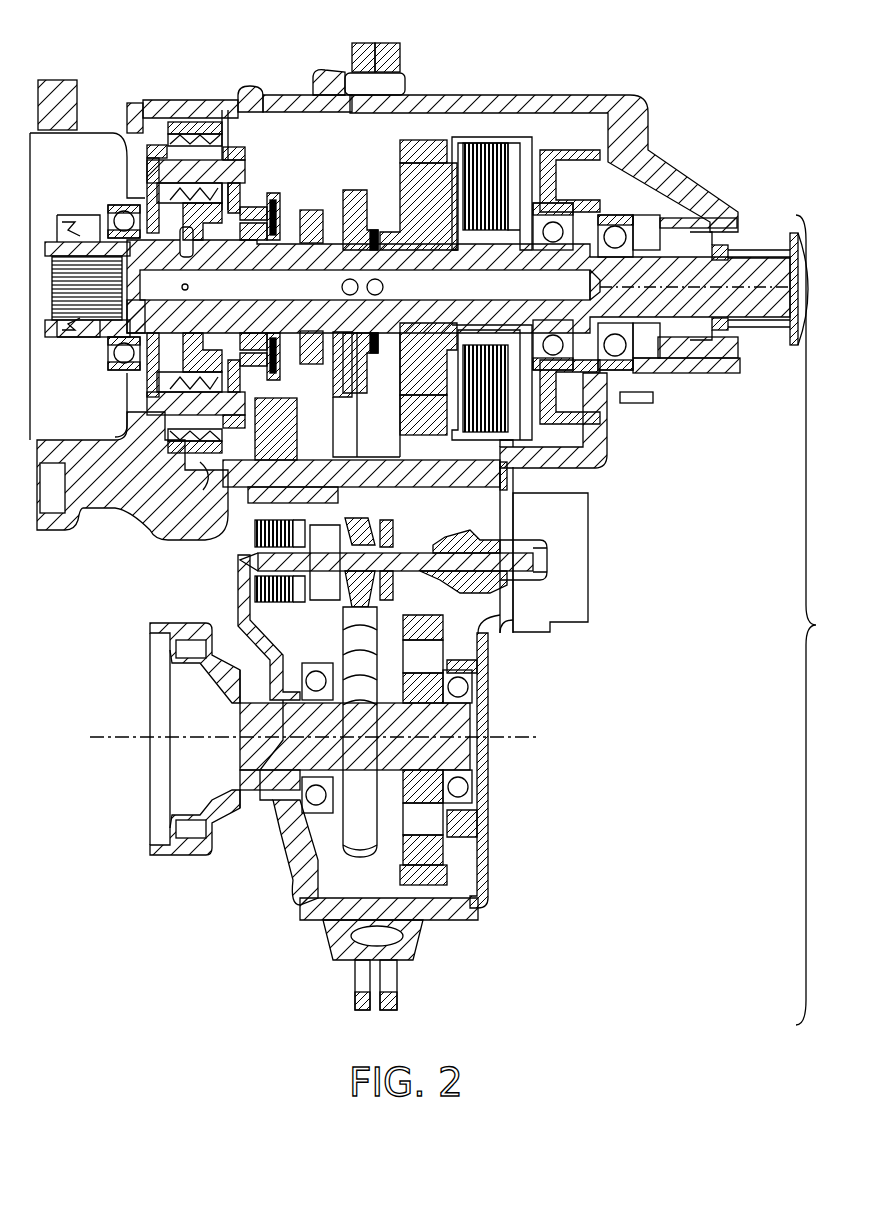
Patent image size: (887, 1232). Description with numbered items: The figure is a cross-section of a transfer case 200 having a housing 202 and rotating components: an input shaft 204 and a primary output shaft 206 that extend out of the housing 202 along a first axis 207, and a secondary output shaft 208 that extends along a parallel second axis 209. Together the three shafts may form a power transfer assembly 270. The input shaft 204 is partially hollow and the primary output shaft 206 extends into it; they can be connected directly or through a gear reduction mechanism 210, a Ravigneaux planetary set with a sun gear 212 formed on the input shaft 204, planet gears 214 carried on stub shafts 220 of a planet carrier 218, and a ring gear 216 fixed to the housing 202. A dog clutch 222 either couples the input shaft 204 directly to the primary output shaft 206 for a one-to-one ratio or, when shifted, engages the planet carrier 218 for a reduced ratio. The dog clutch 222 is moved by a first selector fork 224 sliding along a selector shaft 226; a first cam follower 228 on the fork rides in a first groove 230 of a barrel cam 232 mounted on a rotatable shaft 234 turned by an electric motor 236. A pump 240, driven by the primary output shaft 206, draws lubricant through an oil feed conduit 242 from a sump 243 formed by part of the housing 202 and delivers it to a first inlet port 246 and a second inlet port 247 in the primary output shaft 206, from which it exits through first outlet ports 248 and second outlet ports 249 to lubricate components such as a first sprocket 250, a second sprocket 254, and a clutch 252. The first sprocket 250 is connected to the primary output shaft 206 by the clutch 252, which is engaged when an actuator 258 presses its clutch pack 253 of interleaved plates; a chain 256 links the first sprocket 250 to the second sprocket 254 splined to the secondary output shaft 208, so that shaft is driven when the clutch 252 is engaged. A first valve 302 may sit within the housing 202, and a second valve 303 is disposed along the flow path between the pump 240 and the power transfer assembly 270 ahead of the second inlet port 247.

The transfer case 200 is at (655, 186).
The housing 202 is at (628, 100).
The input shaft 204 is at (75, 238).
The primary output shaft 206 is at (790, 240).
The first axis 207 is at (748, 240).
The secondary output shaft 208 is at (178, 622).
The second axis 209 is at (135, 737).
The gear reduction mechanism 210 is at (248, 145).
The sun gear 212 is at (256, 188).
The planet gears 214 is at (182, 122).
The ring gear 216 is at (205, 120).
The planet carrier 218 is at (240, 192).
The stub shafts 220 is at (155, 145).
The dog clutch 222 is at (275, 205).
The first selector fork 224 is at (292, 432).
The selector shaft 226 is at (178, 500).
The first cam follower 228 is at (300, 532).
The first groove 230 is at (258, 561).
The barrel cam 232 is at (387, 525).
The rotatable shaft 234 is at (548, 580).
The electric motor 236 is at (592, 548).
The pump 240 is at (350, 100).
The oil feed conduit 242 is at (352, 403).
The sump 243 is at (374, 808).
The first inlet port 246 is at (342, 289).
The second inlet port 247 is at (383, 288).
The first outlet ports 248 is at (592, 287).
The second outlet ports 249 is at (124, 205).
The first sprocket 250 is at (402, 165).
The clutch 252 is at (526, 128).
The clutch pack 253 is at (490, 142).
The second sprocket 254 is at (440, 850).
The chain 256 is at (435, 140).
The actuator 258 is at (568, 146).
The power transfer assembly 270 is at (827, 620).
The first valve 302 is at (348, 190).
The second valve 303 is at (170, 385).